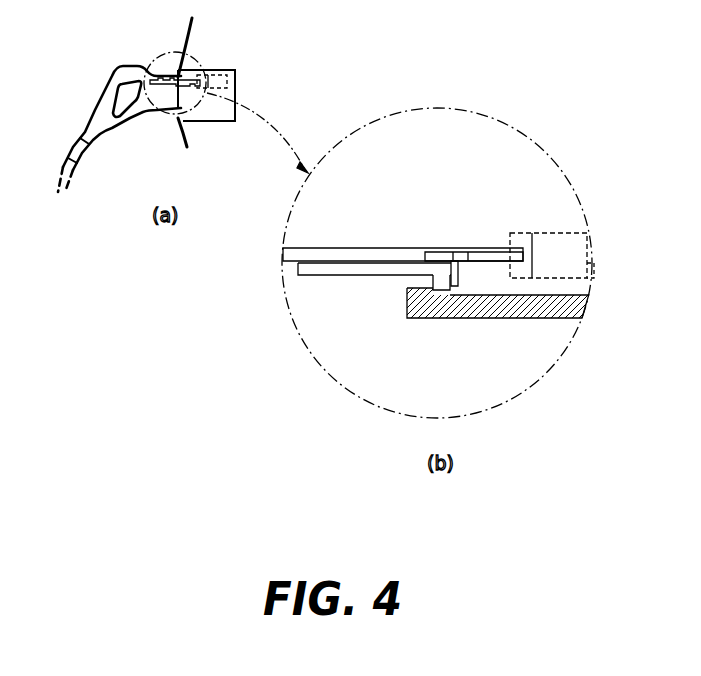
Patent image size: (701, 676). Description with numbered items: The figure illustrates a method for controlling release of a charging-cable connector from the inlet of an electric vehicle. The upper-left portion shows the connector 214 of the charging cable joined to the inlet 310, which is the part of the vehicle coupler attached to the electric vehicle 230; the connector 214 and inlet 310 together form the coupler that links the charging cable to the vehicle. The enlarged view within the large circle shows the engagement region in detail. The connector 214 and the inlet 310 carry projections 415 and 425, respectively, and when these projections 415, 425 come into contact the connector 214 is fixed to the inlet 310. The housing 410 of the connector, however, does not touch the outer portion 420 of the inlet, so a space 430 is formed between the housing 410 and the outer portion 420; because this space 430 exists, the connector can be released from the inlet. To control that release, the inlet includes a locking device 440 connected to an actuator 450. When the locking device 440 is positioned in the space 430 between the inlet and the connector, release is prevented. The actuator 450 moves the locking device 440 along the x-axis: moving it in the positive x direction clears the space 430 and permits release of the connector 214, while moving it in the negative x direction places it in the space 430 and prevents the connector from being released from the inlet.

The connector 214 is at (108, 130).
The electric vehicle 230 is at (188, 32).
The inlet 310 is at (235, 79).
The housing 410 is at (310, 259).
The projection 415 is at (458, 280).
The outer portion 420 is at (411, 248).
The projection 425 is at (432, 281).
The space 430 is at (365, 257).
The locking device 440 is at (460, 257).
The actuator 450 is at (545, 251).